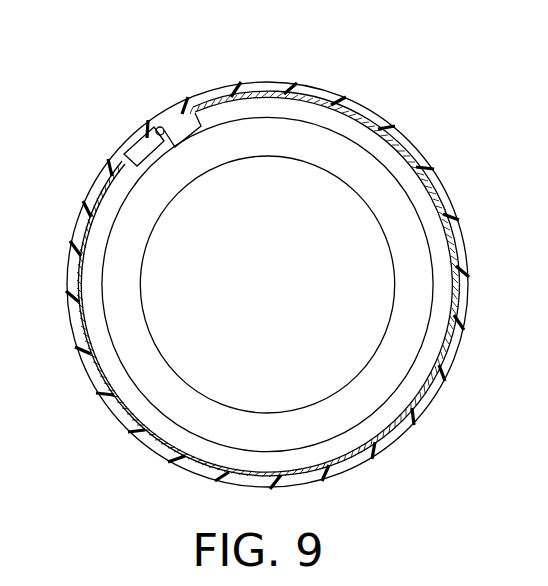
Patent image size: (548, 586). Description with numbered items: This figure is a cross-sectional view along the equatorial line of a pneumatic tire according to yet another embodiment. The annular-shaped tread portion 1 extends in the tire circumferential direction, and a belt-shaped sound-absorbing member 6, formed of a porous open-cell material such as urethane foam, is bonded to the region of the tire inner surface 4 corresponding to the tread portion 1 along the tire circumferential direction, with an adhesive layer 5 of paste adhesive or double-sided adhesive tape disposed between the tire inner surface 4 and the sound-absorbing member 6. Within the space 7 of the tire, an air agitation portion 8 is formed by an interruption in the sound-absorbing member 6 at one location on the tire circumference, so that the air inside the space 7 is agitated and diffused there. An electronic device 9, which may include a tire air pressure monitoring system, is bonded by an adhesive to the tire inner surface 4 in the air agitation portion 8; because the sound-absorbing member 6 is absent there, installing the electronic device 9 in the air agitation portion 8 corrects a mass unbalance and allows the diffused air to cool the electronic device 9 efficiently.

The tread portion 1 is at (396, 142).
The tire inner surface 4 is at (151, 133).
The adhesive layer 5 is at (273, 96).
The sound-absorbing member 6 is at (318, 117).
The space 7 is at (400, 212).
The air agitation portion 8 is at (118, 157).
The electronic device 9 is at (141, 150).